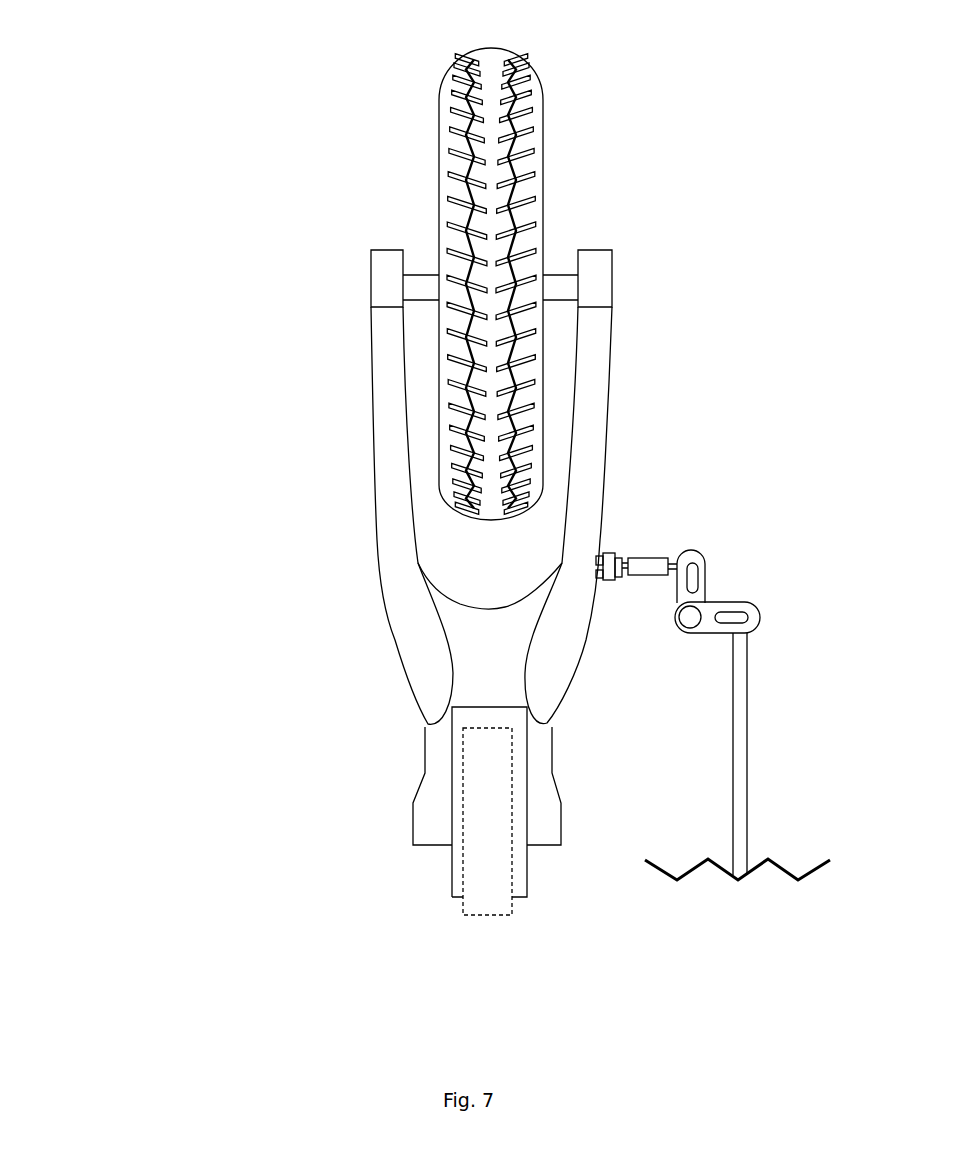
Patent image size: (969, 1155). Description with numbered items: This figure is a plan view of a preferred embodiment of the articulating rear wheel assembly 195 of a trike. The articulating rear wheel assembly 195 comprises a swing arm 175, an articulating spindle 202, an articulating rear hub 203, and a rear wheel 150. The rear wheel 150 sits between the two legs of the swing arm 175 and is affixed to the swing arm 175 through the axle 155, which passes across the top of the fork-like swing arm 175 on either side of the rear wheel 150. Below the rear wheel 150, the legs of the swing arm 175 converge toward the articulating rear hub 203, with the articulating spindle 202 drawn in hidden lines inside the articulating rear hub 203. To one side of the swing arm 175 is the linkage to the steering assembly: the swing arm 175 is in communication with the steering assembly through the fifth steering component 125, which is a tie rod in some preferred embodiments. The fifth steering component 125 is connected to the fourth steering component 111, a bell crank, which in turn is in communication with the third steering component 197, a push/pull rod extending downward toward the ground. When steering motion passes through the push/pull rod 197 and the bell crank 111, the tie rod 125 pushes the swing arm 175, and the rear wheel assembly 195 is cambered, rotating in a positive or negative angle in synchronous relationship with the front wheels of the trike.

The articulating rear wheel assembly 195 is at (113, 161).
The rear wheel 150 is at (440, 102).
The axle 155 is at (562, 273).
The swing arm 175 is at (605, 357).
The fifth steering component 125 is at (650, 558).
The fourth steering component 111 is at (723, 602).
The third steering component 197 is at (747, 747).
The articulating spindle 202 is at (463, 868).
The articulating rear hub 203 is at (525, 878).